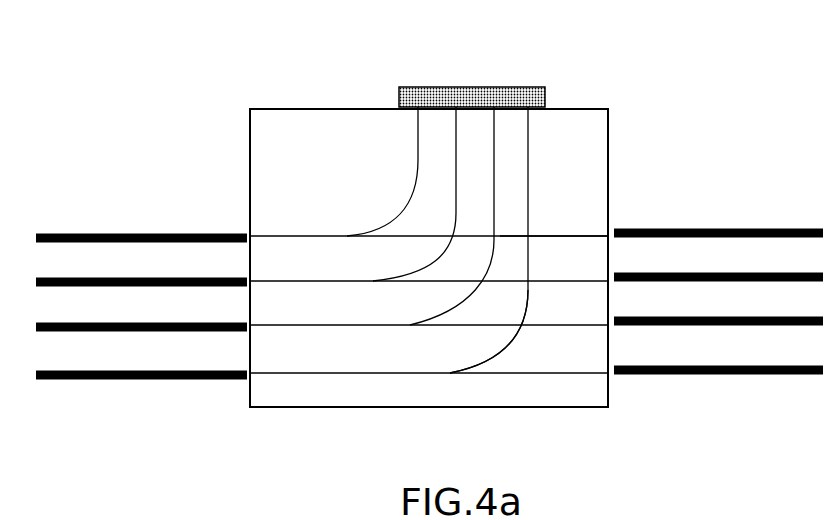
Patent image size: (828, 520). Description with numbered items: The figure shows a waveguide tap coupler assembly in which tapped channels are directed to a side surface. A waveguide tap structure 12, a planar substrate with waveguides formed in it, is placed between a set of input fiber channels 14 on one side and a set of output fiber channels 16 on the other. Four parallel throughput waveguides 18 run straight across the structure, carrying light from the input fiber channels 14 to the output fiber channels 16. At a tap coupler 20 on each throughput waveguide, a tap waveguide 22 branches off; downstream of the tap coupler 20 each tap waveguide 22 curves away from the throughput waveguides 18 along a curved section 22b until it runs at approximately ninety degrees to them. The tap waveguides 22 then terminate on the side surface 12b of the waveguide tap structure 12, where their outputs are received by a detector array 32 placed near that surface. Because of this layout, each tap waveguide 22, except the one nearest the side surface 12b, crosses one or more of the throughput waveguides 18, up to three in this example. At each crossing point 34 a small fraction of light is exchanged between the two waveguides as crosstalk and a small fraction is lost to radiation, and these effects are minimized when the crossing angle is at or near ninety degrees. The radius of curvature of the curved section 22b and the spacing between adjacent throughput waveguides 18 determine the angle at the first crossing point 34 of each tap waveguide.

The waveguide tap structure 12 is at (295, 408).
The side surface 12b is at (365, 109).
The input fiber channels 14 is at (88, 380).
The output fiber channels 16 is at (750, 377).
The throughput waveguides 18 is at (380, 373).
The tap coupler 20 is at (346, 236).
The tap waveguides 22 is at (529, 162).
The curved section 22b is at (504, 346).
The detector array 32 is at (483, 87).
The crossing point 34 is at (529, 233).